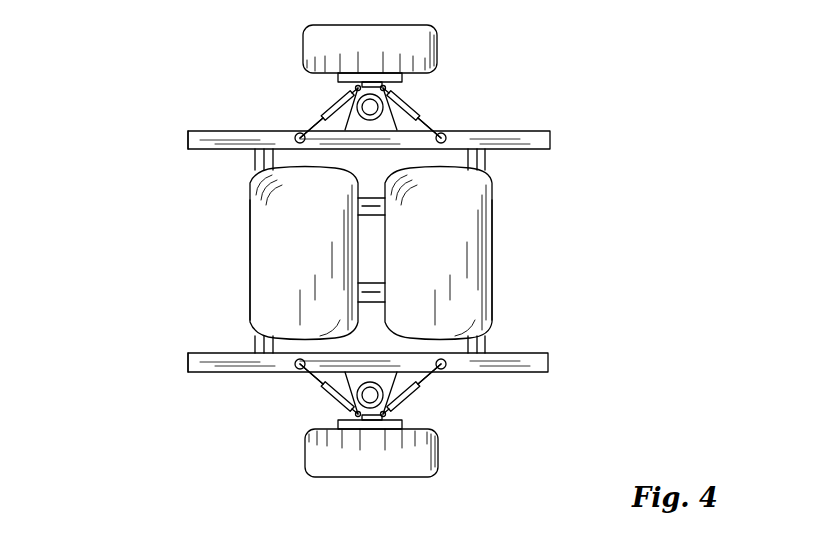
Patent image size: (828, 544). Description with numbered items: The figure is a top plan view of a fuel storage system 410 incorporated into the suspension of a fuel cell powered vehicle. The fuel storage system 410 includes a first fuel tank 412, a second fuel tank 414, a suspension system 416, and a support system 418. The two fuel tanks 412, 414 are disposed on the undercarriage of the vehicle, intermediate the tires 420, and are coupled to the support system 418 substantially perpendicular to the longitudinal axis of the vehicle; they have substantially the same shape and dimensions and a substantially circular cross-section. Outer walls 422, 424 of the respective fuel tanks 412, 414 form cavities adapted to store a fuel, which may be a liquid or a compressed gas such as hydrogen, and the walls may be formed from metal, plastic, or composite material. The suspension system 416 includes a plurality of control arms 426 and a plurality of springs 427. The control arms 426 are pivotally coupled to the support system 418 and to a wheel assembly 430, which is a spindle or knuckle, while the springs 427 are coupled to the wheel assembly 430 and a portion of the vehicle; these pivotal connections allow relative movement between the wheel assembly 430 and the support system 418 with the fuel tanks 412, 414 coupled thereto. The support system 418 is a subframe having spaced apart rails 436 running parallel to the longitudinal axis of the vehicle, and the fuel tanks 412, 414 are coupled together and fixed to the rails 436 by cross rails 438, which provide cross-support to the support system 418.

The fuel storage system 410 is at (140, 74).
The first fuel tank 412 is at (327, 270).
The second fuel tank 414 is at (462, 270).
The suspension system 416 is at (437, 110).
The support system 418 is at (550, 130).
The tires 420 is at (391, 55).
The outer wall 422 is at (265, 241).
The outer wall 424 is at (480, 249).
The control arms 426 is at (330, 102).
The springs 427 is at (298, 133).
The wheel assembly 430 is at (343, 85).
The rails 436 is at (188, 135).
The cross rails 438 is at (265, 340).